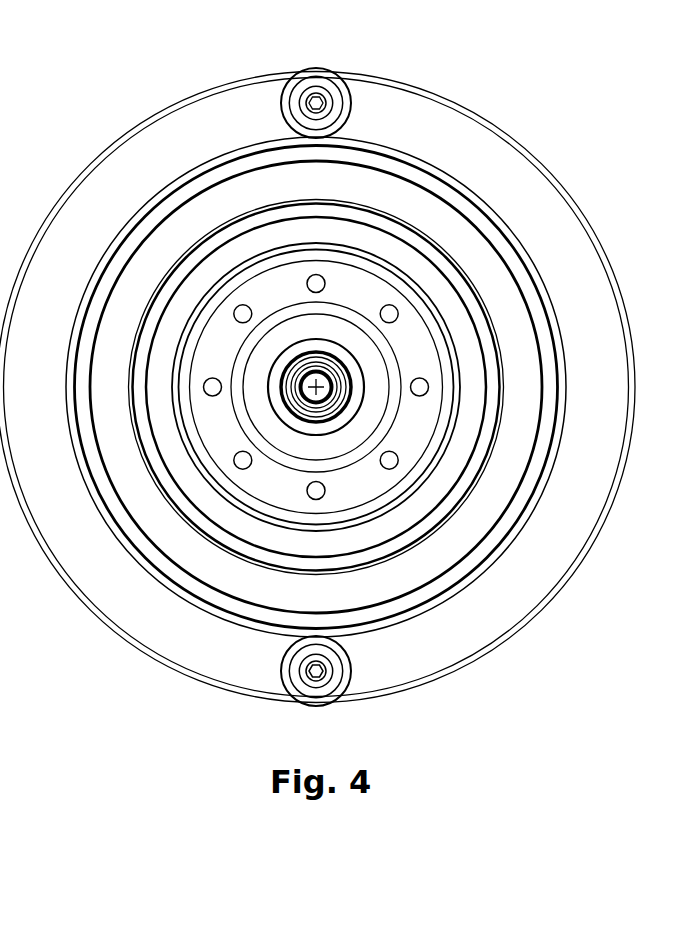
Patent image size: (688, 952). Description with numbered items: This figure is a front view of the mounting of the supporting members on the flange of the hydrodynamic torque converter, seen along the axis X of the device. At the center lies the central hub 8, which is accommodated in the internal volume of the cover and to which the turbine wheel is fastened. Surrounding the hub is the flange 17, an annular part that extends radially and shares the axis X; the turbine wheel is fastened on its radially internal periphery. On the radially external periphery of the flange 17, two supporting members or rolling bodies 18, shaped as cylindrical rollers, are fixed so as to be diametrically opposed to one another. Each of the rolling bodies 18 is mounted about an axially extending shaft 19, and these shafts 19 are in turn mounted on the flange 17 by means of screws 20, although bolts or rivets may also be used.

The central hub 8 is at (352, 386).
The flange 17 is at (488, 160).
The rolling bodies 18 is at (310, 68).
The shafts 19 is at (318, 92).
The screws 20 is at (352, 114).
The axis X is at (312, 406).